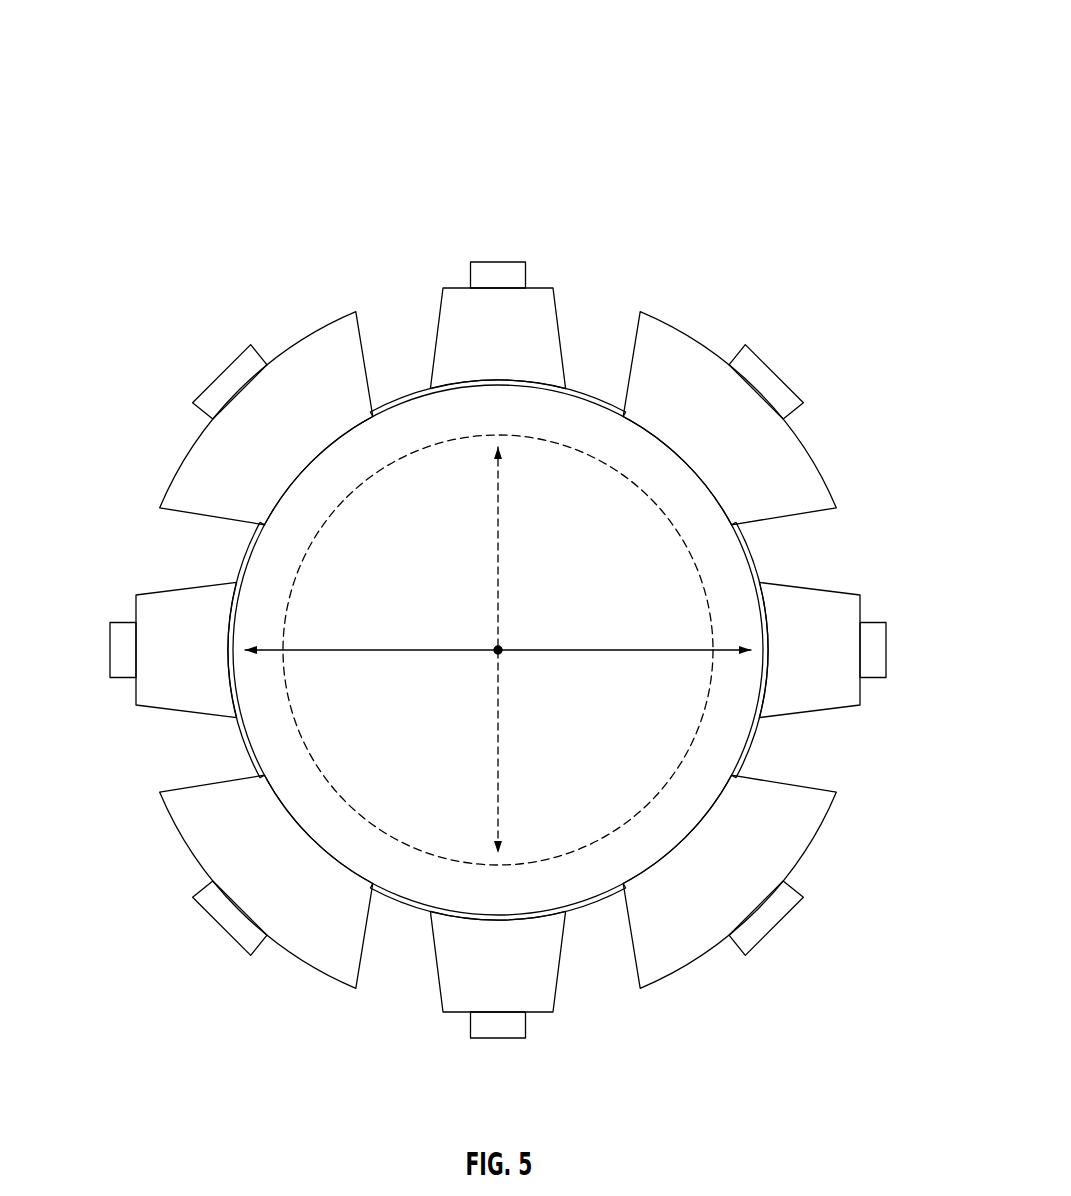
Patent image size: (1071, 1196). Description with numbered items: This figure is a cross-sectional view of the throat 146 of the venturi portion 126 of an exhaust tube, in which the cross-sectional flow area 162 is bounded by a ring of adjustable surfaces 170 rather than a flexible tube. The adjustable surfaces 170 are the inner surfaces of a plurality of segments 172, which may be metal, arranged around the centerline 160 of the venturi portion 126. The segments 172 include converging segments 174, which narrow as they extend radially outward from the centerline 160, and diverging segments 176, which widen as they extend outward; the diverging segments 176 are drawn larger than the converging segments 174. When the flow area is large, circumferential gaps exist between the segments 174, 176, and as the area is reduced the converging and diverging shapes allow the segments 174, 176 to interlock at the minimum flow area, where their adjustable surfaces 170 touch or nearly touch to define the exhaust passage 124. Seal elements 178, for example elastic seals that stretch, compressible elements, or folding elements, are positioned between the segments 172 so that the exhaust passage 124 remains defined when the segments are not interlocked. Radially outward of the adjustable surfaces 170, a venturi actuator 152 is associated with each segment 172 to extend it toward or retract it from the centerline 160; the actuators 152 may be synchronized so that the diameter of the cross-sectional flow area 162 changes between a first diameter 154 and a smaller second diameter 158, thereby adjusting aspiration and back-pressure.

The exhaust passage 124 is at (114, 804).
The venturi portion 126 is at (178, 157).
The throat 146 is at (699, 79).
The venturi actuator 152 is at (497, 262).
The first diameter 154 is at (350, 655).
The second diameter 158 is at (503, 560).
The centerline 160 is at (503, 640).
The cross-sectional flow area 162 is at (400, 776).
The adjustable surfaces 170 is at (358, 420).
The segments 172 is at (462, 289).
The converging segments 174 is at (478, 355).
The diverging segments 176 is at (241, 450).
The seal elements 178 is at (578, 395).